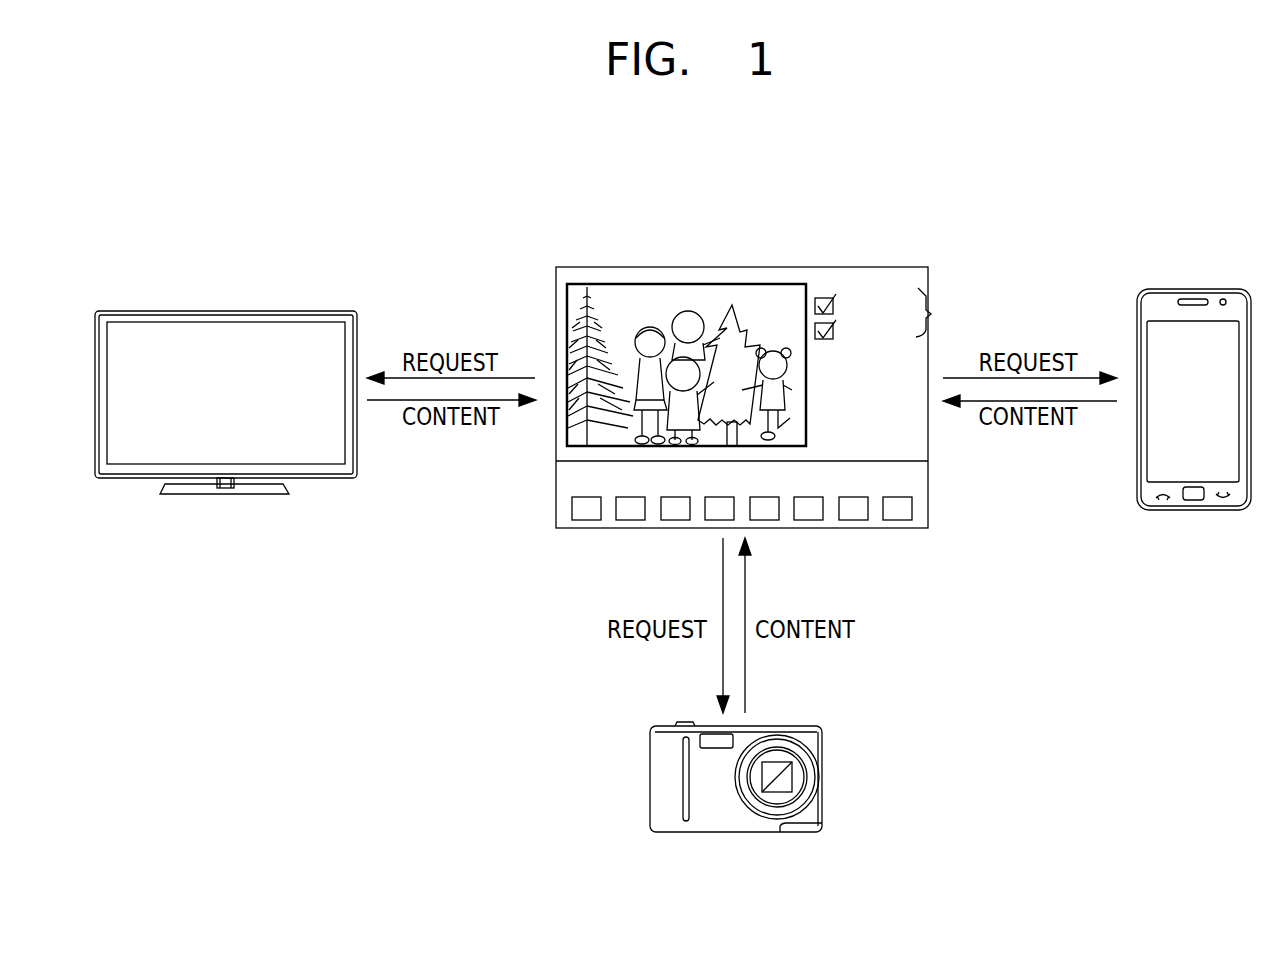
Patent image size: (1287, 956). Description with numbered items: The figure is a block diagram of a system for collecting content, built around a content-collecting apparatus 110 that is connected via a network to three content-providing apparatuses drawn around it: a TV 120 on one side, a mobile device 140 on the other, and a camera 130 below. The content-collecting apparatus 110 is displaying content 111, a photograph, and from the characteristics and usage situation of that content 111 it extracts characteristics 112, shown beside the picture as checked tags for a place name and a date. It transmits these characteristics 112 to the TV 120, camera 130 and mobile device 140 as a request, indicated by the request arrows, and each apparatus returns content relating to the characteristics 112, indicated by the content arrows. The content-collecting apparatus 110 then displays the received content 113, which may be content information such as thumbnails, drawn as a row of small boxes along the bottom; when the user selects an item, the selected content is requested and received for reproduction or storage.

The content-collecting apparatus 110 is at (818, 267).
The content 111 is at (677, 284).
The characteristics 112 is at (931, 314).
The received content 113 is at (920, 509).
The TV 120 is at (226, 311).
The camera 130 is at (822, 788).
The mobile device 140 is at (1195, 510).